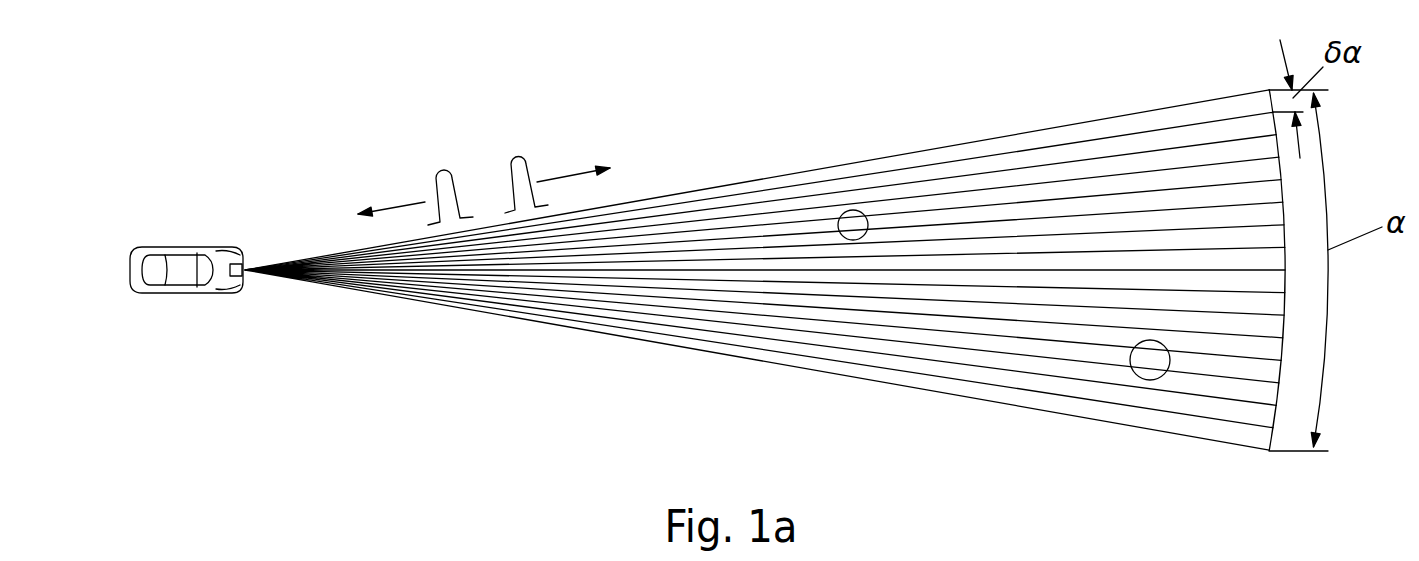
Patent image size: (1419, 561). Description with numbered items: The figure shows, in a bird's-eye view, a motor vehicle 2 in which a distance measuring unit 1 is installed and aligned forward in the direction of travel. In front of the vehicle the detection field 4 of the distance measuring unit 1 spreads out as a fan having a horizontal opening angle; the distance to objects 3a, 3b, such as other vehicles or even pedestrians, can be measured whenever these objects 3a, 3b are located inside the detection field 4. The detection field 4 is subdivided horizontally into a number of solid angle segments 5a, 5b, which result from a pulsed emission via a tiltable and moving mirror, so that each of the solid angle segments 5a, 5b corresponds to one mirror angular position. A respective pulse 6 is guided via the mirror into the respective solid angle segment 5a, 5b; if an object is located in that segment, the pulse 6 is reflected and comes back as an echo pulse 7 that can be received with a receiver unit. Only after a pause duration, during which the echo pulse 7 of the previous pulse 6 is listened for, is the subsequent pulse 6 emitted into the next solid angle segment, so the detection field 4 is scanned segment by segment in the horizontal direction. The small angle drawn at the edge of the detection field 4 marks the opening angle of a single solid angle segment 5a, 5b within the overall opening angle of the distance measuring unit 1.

The distance measuring unit 1 is at (238, 260).
The motor vehicle 2 is at (138, 240).
The object 3a is at (852, 225).
The object 3b is at (1150, 360).
The detection field 4 is at (673, 192).
The solid angle segment 5a is at (1023, 142).
The solid angle segment 5b is at (1122, 147).
The pulse 6 is at (517, 170).
The echo pulse 7 is at (441, 182).